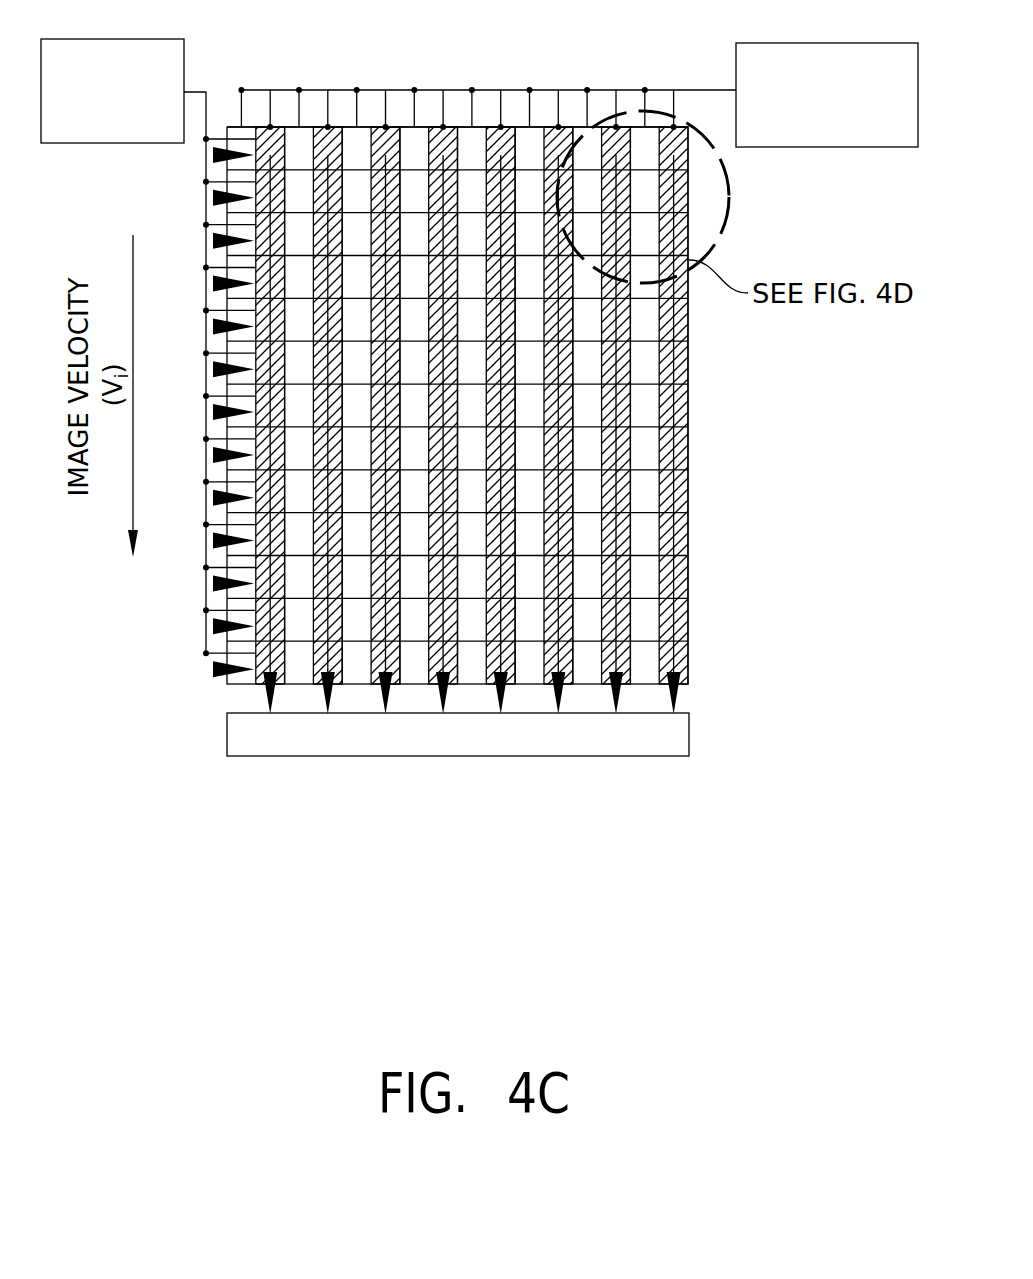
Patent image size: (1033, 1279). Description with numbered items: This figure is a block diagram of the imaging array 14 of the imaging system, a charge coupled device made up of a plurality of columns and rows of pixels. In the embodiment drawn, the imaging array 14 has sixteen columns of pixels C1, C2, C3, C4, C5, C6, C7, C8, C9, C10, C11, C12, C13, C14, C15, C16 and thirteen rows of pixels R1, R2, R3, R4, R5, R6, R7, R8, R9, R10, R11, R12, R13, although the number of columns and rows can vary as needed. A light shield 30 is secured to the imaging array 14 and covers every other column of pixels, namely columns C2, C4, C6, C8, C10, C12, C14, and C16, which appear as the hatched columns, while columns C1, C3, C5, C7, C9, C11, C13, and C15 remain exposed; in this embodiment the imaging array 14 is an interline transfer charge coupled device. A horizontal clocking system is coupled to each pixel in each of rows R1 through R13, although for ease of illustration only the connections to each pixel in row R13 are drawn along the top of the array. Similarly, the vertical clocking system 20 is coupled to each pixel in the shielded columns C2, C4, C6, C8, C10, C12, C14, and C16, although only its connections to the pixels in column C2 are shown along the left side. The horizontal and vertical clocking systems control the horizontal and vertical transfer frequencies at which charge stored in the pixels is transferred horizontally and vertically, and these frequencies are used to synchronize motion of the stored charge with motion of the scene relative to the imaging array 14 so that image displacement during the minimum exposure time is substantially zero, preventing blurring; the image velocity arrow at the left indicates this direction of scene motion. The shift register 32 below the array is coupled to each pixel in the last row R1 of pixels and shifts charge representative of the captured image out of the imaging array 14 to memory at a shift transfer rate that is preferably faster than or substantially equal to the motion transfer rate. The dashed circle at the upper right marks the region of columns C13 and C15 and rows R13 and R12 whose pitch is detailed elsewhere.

The imaging array 14 is at (213, 672).
The vertical clocking system 20 is at (110, 143).
The light shield 30 is at (830, 147).
The shift register 32 is at (689, 738).
The column of pixels C1 is at (246, 127).
The column of pixels C2 is at (279, 127).
The column of pixels C3 is at (304, 127).
The column of pixels C4 is at (337, 127).
The column of pixels C5 is at (362, 127).
The column of pixels C6 is at (394, 127).
The column of pixels C7 is at (419, 127).
The column of pixels C8 is at (452, 127).
The column of pixels C9 is at (477, 127).
The column of pixels C10 is at (510, 127).
The column of pixels C11 is at (535, 127).
The column of pixels C12 is at (567, 127).
The column of pixels C13 is at (592, 127).
The column of pixels C14 is at (625, 127).
The column of pixels C15 is at (650, 127).
The column of pixels C16 is at (683, 127).
The row of pixels R1 is at (689, 663).
The row of pixels R2 is at (689, 620).
The row of pixels R3 is at (689, 577).
The row of pixels R4 is at (689, 534).
The row of pixels R5 is at (689, 491).
The row of pixels R6 is at (689, 448).
The row of pixels R7 is at (689, 406).
The row of pixels R8 is at (689, 364).
The row of pixels R9 is at (689, 321).
The row of pixels R10 is at (689, 289).
The row of pixels R11 is at (689, 234).
The row of pixels R12 is at (689, 191).
The row of pixels R13 is at (689, 148).